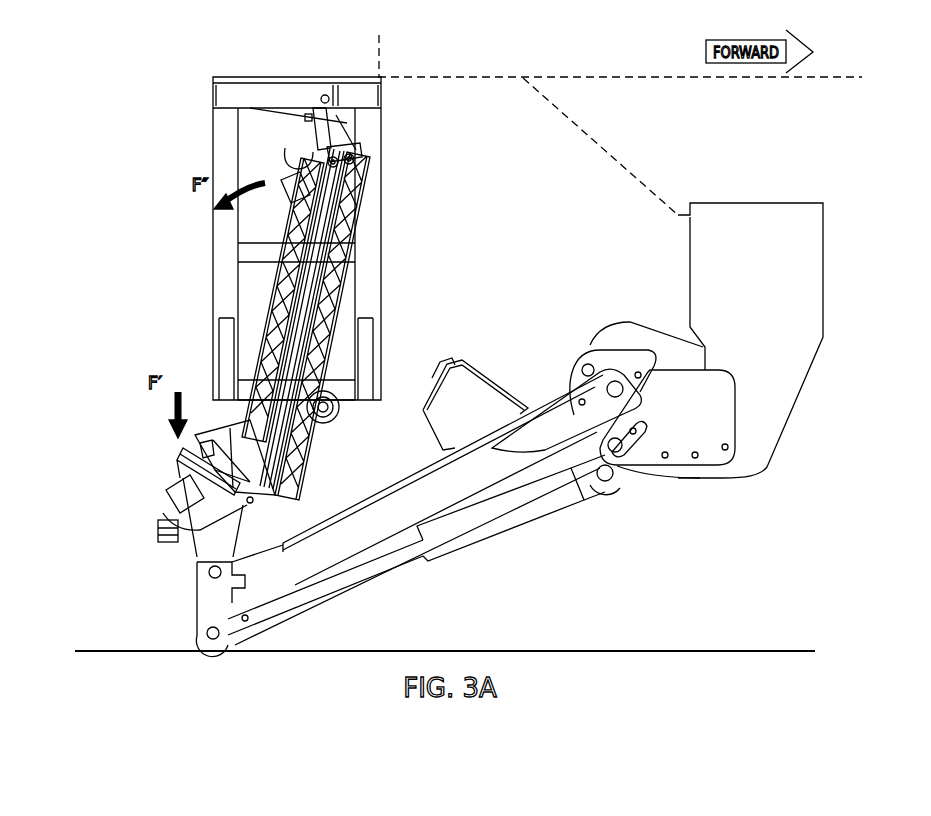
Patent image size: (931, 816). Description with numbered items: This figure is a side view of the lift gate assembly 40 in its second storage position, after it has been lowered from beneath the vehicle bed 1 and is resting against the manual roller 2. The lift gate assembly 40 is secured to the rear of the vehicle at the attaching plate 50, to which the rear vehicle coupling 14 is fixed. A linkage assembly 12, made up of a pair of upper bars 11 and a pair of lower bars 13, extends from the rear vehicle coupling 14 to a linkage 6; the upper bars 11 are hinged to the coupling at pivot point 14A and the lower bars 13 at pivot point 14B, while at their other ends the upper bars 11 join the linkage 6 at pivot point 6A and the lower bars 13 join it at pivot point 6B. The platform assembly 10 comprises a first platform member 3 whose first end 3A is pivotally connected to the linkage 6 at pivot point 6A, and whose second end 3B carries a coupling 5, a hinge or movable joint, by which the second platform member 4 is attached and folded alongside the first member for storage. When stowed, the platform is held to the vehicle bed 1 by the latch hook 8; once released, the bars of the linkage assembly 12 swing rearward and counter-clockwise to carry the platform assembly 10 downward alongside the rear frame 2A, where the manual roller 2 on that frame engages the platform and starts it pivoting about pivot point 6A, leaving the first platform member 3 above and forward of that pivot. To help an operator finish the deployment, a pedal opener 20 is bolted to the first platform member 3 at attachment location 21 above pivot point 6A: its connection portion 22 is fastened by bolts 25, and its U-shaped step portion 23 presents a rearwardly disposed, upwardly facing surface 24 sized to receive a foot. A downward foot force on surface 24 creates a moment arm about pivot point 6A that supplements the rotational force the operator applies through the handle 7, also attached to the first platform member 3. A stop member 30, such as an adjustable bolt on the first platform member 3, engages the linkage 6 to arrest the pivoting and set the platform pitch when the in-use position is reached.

The vehicle bed 1 is at (432, 70).
The manual roller 2 is at (340, 400).
The rear frame 2A is at (213, 125).
The first platform member 3 is at (298, 215).
The first end 3A is at (252, 427).
The second end 3B is at (312, 146).
The second platform member 4 is at (342, 300).
The coupling 5 is at (354, 146).
The linkage 6 is at (210, 600).
The pivot point 6A is at (208, 572).
The pivot point 6B is at (206, 633).
The handle 7 is at (283, 190).
The latch hook 8 is at (323, 132).
The platform assembly 10 is at (258, 287).
The upper bars 11 is at (543, 420).
The linkage assembly 12 is at (359, 482).
The lower bars 13 is at (397, 552).
The rear vehicle coupling 14 is at (680, 440).
The pivot point 14A is at (615, 380).
The pivot point 14B is at (609, 482).
The pedal opener 20 is at (165, 513).
The attachment location 21 is at (185, 455).
The connection portion 22 is at (180, 458).
The U-shaped step portion 23 is at (254, 500).
The upwardly facing surface 24 is at (162, 507).
The bolts 25 is at (177, 473).
The stop member 30 is at (157, 530).
The lift gate assembly 40 is at (125, 247).
The attaching plate 50 is at (773, 388).